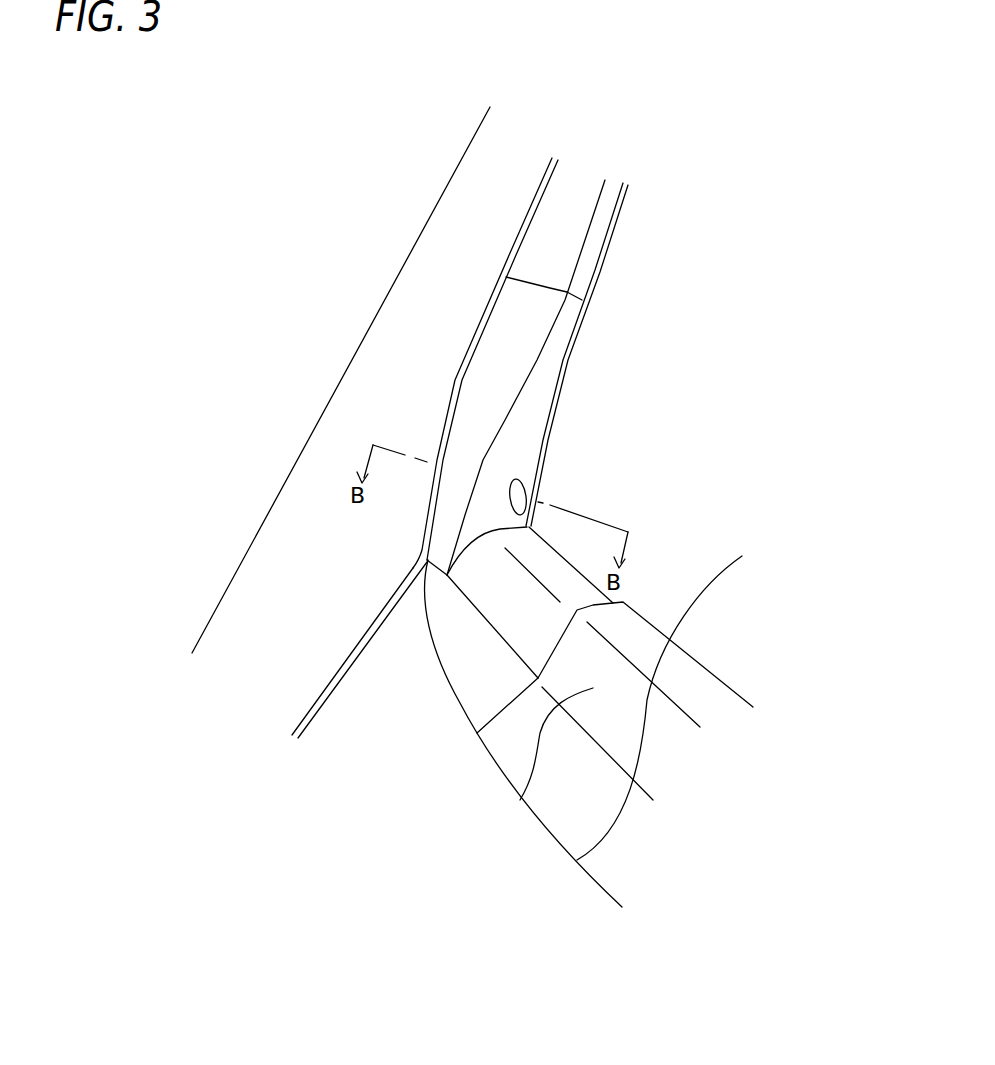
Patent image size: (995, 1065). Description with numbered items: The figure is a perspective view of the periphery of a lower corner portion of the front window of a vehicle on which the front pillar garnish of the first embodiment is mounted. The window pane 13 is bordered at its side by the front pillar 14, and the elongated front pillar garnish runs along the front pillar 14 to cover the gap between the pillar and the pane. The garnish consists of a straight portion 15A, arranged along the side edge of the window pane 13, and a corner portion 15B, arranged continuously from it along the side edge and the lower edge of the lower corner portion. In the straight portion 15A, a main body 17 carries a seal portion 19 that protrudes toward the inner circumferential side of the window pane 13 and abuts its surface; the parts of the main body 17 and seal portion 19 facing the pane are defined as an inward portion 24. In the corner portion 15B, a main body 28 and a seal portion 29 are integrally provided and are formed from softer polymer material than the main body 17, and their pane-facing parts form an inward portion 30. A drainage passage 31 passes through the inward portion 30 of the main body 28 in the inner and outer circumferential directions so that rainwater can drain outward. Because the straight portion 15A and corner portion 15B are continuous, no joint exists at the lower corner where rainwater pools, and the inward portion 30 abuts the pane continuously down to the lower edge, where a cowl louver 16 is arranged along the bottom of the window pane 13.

The front pillar 14 is at (462, 155).
The straight portion 15A is at (557, 213).
The corner portion 15B is at (482, 393).
The main body 17 is at (545, 243).
The main body 28 is at (465, 440).
The inward portion 30 is at (532, 400).
The inward portion 24 is at (603, 223).
The seal portion 19 is at (600, 270).
The seal portion 29 is at (550, 430).
The drainage passage 31 is at (517, 494).
The cowl louver 16 is at (520, 800).
The window pane 13 is at (577, 860).